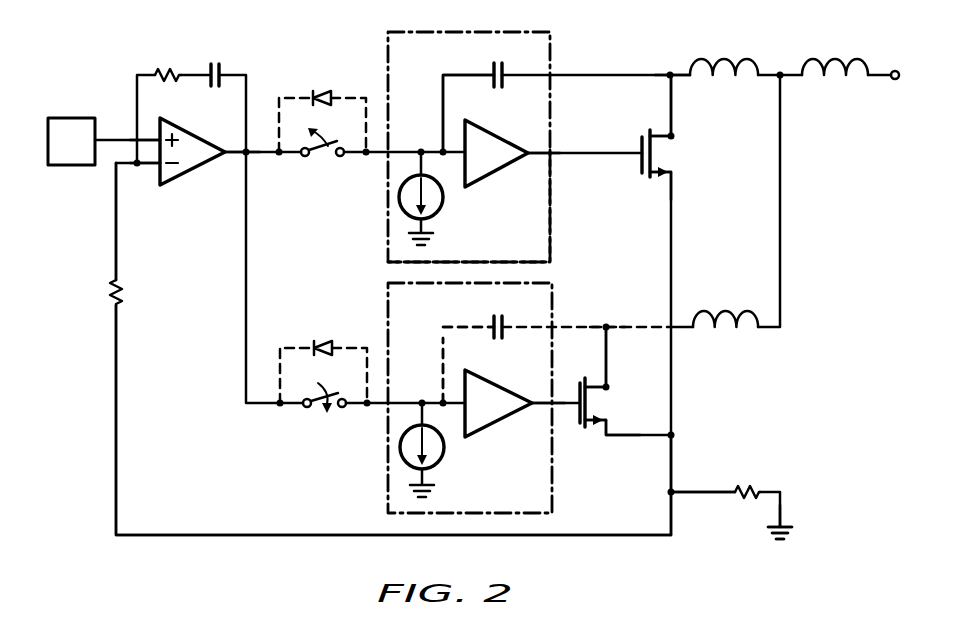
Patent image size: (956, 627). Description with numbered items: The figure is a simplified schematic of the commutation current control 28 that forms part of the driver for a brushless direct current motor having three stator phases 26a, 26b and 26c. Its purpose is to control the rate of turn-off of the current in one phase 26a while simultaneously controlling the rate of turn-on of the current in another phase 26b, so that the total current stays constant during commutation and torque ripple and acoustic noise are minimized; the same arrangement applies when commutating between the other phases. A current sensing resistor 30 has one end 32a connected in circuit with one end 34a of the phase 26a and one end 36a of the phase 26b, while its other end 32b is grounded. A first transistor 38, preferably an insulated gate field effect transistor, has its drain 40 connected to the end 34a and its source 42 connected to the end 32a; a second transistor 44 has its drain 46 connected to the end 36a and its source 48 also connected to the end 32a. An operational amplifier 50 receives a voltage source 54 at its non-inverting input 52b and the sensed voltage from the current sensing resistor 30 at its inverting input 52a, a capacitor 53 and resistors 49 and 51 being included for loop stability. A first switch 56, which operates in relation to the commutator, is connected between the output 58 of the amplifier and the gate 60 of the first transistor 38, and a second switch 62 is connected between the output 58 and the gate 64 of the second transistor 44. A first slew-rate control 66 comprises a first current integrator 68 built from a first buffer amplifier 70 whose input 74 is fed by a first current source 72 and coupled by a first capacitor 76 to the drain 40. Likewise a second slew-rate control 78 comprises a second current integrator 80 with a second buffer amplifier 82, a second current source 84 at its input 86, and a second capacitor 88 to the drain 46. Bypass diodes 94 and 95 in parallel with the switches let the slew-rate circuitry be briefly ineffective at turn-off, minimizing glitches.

The commutation current control 28 is at (86, 398).
The phase 26a is at (735, 58).
The phase 26b is at (724, 310).
The phase 26c is at (846, 58).
The current sensing resistor 30 is at (756, 488).
The one end of current sensing resistor 32a is at (705, 490).
The other end of current sensing resistor 32b is at (784, 505).
The one end of phase 34a is at (672, 71).
The one end of phase 36a is at (614, 323).
The first transistor 38 is at (665, 153).
The drain 40 is at (671, 133).
The source 42 is at (672, 176).
The second transistor 44 is at (600, 409).
The drain 46 is at (608, 383).
The source 48 is at (606, 433).
The resistor 49 is at (110, 288).
The operational amplifier 50 is at (196, 134).
The resistor 51 is at (163, 70).
The inverting input 52a is at (146, 165).
The non-inverting input 52b is at (152, 139).
The capacitor 53 is at (222, 64).
The voltage source 54 is at (68, 117).
The first switch 56 is at (325, 144).
The output 58 is at (241, 157).
The gate 60 is at (534, 158).
The second switch 62 is at (320, 400).
The gate 64 is at (538, 407).
The first slew-rate control 66 is at (624, 49).
The first current integrator 68 is at (553, 196).
The first buffer amplifier 70 is at (498, 136).
The first current source 72 is at (443, 197).
The input 74 is at (449, 148).
The first capacitor 76 is at (490, 71).
The second slew-rate control 78 is at (634, 508).
The second current integrator 80 is at (386, 298).
The second buffer amplifier 82 is at (499, 386).
The second current source 84 is at (444, 447).
The input 86 is at (451, 398).
The second capacitor 88 is at (490, 322).
The bypass diode 94 is at (333, 96).
The bypass diode 95 is at (312, 346).